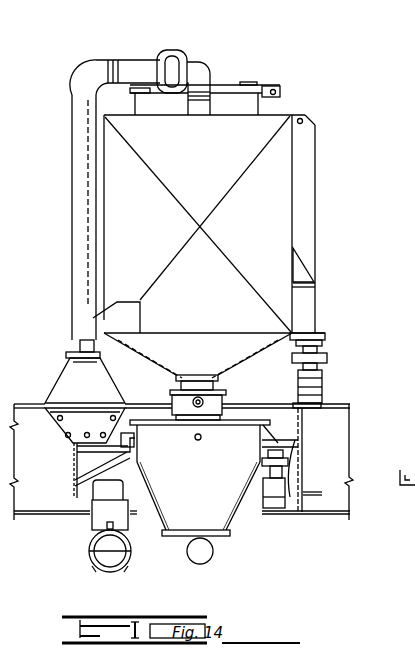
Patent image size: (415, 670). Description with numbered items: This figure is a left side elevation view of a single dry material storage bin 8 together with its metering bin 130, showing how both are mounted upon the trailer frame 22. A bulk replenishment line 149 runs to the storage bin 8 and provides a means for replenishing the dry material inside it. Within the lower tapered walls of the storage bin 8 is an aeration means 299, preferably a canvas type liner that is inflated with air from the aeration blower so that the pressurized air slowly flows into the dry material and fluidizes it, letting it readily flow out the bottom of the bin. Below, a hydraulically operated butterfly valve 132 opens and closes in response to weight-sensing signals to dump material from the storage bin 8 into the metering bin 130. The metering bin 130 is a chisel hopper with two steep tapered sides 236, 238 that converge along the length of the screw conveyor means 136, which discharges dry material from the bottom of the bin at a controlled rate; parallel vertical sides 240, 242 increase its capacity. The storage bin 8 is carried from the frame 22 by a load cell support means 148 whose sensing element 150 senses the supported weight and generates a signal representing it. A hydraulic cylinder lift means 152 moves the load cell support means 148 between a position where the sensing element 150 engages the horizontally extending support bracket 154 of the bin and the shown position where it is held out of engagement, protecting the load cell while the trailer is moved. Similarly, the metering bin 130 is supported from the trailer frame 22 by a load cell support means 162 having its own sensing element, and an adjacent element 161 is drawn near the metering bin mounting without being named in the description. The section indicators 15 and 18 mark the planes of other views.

The storage bin 8 is at (206, 168).
The section line 15- 15 is at (342, 46).
The section line 18- 18 is at (203, 345).
The trailer frame 22 is at (333, 406).
The metering bin 130 is at (213, 498).
The butterfly valve 132 is at (212, 400).
The screw conveyor means 136 is at (188, 568).
The load cell support means 148 is at (342, 354).
The bulk replenishment line 149 is at (82, 78).
The sensing element 150 is at (330, 342).
The hydraulic cylinder lift means 152 is at (320, 388).
The support bracket 154 is at (312, 330).
The bracket 161 is at (105, 458).
The load cell support means 162 is at (300, 466).
The steep tapered side 236 is at (152, 500).
The steep tapered side 238 is at (247, 492).
The parallel vertical side 240 is at (118, 470).
The parallel vertical side 242 is at (272, 438).
The aeration means 299 is at (160, 355).